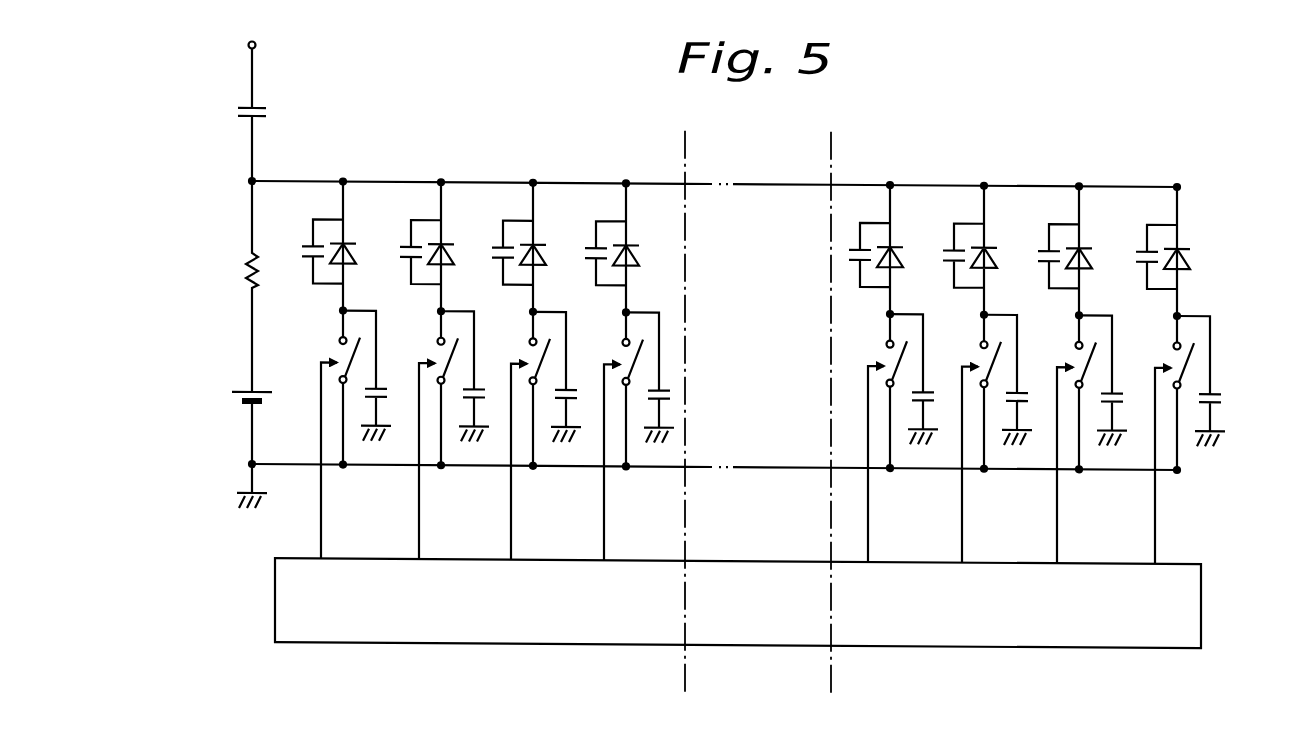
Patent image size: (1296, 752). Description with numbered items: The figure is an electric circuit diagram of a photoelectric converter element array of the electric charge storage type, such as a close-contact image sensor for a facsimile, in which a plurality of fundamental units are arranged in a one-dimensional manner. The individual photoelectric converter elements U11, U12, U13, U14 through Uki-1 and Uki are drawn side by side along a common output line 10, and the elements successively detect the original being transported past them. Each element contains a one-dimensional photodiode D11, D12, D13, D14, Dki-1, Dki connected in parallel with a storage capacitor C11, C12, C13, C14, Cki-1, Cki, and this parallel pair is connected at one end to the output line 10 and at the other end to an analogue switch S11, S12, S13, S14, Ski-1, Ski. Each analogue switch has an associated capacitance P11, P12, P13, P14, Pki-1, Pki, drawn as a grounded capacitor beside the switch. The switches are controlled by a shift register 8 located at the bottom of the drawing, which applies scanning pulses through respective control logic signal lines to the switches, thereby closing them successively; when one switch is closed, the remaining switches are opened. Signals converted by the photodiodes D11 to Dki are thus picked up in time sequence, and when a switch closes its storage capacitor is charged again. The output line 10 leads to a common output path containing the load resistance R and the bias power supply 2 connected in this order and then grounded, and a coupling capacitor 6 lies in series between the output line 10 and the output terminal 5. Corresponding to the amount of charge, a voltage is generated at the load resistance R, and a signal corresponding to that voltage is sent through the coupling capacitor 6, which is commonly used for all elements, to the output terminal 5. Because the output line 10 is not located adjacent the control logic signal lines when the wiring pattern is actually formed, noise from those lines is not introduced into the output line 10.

The output terminal 5 is at (255, 44).
The coupling capacitor 6 is at (266, 107).
The output line 10 is at (253, 155).
The load resistance R is at (246, 270).
The bias power supply 2 is at (247, 391).
The shift register 8 is at (275, 606).
The photoelectric converter element U11 is at (323, 209).
The photoelectric converter element U12 is at (422, 209).
The photoelectric converter element U13 is at (514, 209).
The photoelectric converter element U14 is at (608, 209).
The photoelectric converter element Uki-1 is at (1059, 209).
The photoelectric converter element Uki is at (1157, 209).
The storage capacitor C11 is at (311, 246).
The storage capacitor C12 is at (402, 256).
The storage capacitor C13 is at (494, 256).
The storage capacitor C14 is at (588, 256).
The storage capacitor Cki-1 is at (1043, 246).
The storage capacitor Cki is at (1140, 249).
The photodiode D11 is at (350, 258).
The photodiode D12 is at (448, 258).
The photodiode D13 is at (540, 258).
The photodiode D14 is at (634, 258).
The photodiode Dki-1 is at (1092, 250).
The photodiode Dki is at (1182, 250).
The analogue switch S11 is at (354, 352).
The analogue switch S12 is at (452, 352).
The analogue switch S13 is at (544, 352).
The analogue switch S14 is at (637, 352).
The analogue switch Ski-1 is at (1085, 362).
The analogue switch Ski is at (1188, 352).
The capacitance of analogue switch P11 is at (378, 376).
The capacitance of analogue switch P12 is at (474, 376).
The capacitance of analogue switch P13 is at (566, 377).
The capacitance of analogue switch P14 is at (672, 390).
The capacitance of analogue switch Pki-1 is at (1028, 390).
The capacitance of analogue switch Pki is at (1213, 392).